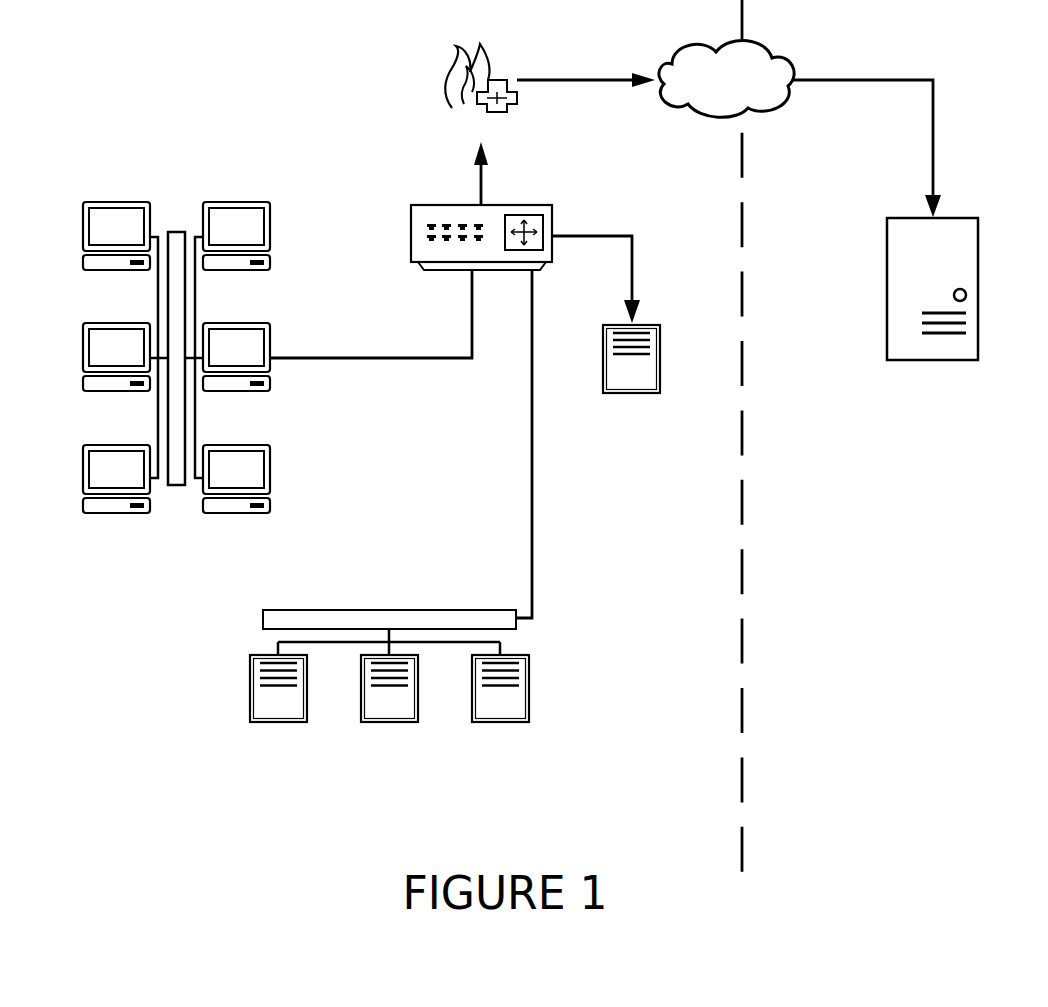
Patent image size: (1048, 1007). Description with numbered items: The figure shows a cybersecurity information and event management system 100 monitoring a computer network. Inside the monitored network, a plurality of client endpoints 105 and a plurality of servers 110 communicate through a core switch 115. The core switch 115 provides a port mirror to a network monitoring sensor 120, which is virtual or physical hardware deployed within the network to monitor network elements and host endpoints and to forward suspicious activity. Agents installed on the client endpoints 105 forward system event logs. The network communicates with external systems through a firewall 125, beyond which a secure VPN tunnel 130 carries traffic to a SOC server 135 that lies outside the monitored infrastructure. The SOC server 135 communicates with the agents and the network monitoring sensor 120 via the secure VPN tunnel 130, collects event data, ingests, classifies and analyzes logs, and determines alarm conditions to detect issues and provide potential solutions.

The cybersecurity information and event management system 100 is at (302, 57).
The client endpoints 105 is at (224, 202).
The servers 110 is at (529, 680).
The core switch 115 is at (505, 205).
The network monitoring sensor 120 is at (645, 322).
The firewall 125 is at (479, 52).
The secure VPN tunnel 130 is at (757, 56).
The SOC server 135 is at (955, 217).